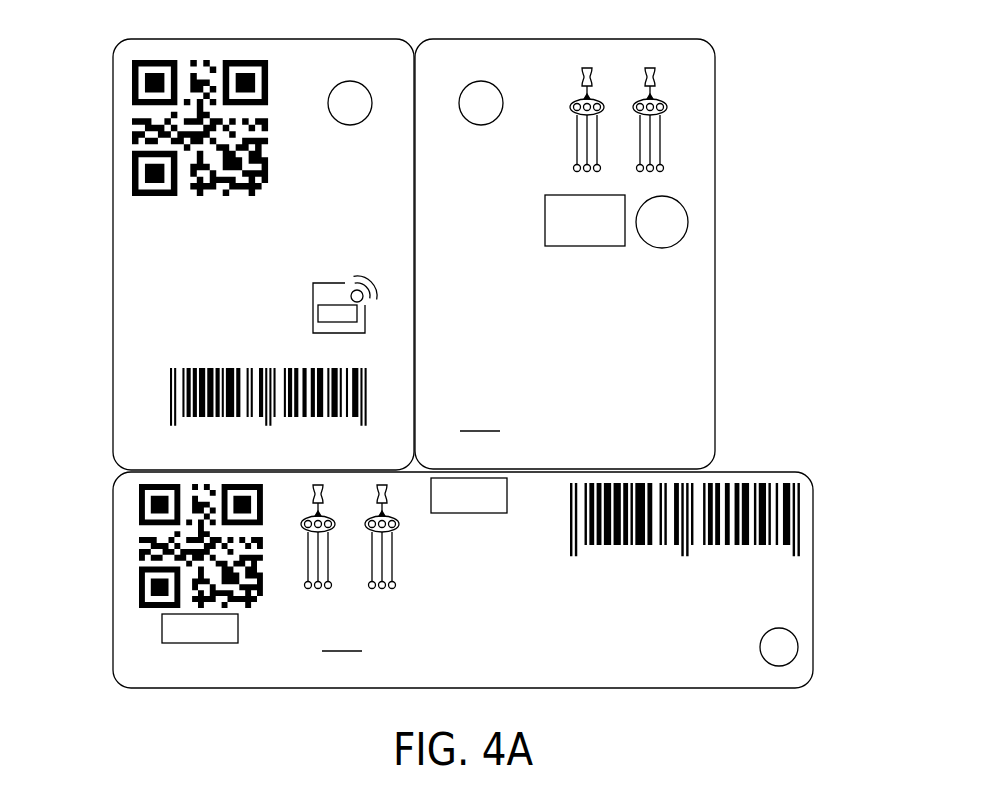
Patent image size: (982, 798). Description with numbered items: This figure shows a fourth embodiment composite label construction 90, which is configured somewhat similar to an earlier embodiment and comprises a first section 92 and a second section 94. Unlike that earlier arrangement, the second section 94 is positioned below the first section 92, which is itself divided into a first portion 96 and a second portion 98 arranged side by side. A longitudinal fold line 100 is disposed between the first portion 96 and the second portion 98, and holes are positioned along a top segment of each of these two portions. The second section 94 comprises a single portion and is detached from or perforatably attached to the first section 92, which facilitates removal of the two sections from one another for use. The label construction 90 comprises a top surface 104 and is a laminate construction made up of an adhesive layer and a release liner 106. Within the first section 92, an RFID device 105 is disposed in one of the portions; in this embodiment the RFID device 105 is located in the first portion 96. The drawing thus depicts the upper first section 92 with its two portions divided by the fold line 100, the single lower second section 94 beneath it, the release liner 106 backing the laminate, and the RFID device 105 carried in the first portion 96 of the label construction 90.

The composite label construction 90 is at (544, 20).
The first section 92 is at (100, 220).
The second section 94 is at (813, 602).
The first portion 96 is at (343, 52).
The second portion 98 is at (644, 52).
The longitudinal fold line 100 is at (415, 213).
The top surface 104 is at (690, 170).
The RFID device 105 is at (122, 304).
The release liner 106 is at (778, 385).